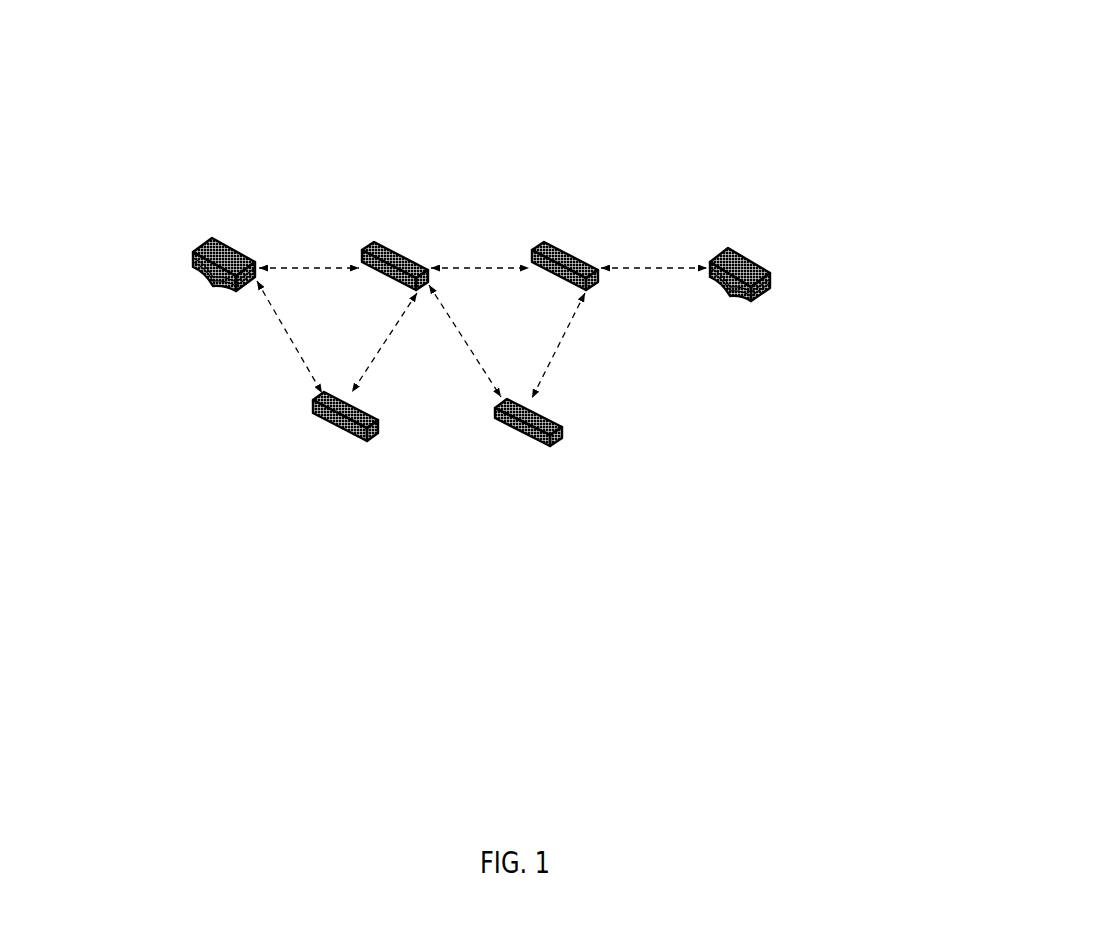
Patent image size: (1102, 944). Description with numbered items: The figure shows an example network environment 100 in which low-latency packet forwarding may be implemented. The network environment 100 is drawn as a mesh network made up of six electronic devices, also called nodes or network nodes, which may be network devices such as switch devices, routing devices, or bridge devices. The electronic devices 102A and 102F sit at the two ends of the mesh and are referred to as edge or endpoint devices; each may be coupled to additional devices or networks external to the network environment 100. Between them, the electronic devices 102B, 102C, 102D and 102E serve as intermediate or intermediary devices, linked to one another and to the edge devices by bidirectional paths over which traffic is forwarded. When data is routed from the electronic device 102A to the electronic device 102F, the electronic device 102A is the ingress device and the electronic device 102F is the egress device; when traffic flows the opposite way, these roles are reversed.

The network environment 100 is at (1014, 58).
The electronic device 102A is at (207, 236).
The electronic device 102B is at (375, 420).
The electronic device 102C is at (393, 280).
The electronic device 102D is at (552, 420).
The electronic device 102E is at (561, 280).
The electronic device 102F is at (750, 258).